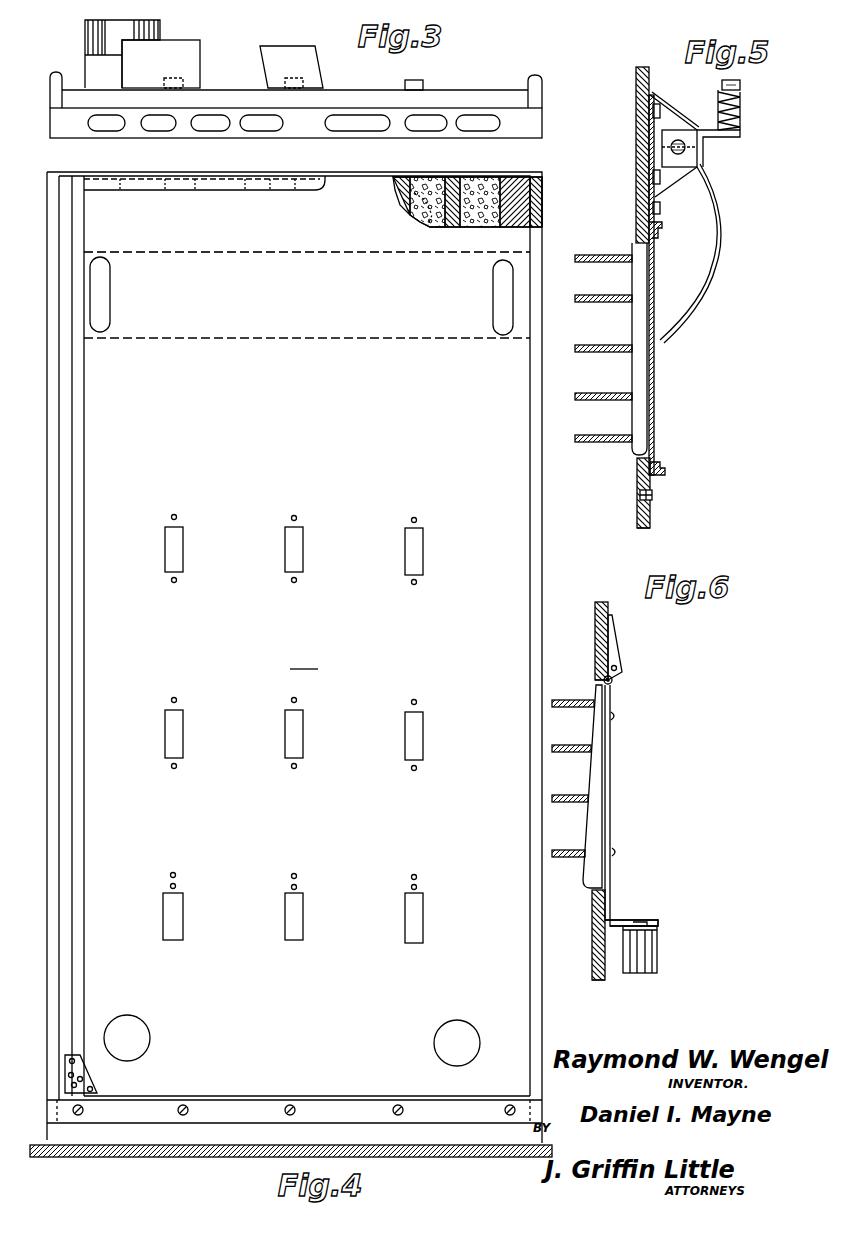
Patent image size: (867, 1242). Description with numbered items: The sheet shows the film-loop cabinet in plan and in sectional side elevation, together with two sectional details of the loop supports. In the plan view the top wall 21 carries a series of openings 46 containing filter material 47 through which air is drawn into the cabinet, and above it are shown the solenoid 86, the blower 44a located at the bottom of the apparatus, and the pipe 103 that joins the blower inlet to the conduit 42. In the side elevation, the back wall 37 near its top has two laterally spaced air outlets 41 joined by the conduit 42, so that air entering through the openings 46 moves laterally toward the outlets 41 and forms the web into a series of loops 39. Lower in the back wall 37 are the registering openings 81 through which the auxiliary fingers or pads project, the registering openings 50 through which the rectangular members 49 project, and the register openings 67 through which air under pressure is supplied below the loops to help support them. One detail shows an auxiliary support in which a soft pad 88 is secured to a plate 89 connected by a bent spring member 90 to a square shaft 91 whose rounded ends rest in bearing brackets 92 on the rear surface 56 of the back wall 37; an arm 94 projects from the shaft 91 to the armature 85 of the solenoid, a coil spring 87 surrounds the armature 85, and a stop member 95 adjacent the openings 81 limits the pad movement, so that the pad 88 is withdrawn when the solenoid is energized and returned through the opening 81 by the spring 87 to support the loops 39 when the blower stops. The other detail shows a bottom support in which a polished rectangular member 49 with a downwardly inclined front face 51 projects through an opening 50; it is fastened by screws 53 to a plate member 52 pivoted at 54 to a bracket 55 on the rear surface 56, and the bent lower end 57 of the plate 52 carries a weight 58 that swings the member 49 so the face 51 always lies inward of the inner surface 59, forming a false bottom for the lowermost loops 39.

In FIG. 3, the top wall 21 is at (308, 126).
In FIG. 3, the openings 46 is at (163, 124).
In FIG. 4, the openings 46 is at (432, 178).
In FIG. 3, the blower 44a is at (85, 40).
In FIG. 3, the solenoid 86 is at (190, 58).
In FIG. 3, the pipe 103 is at (322, 68).
In FIG. 4, the filter material 47 is at (480, 195).
In FIG. 4, the air outlets 41 is at (110, 290).
In FIG. 4, the conduit 42 is at (315, 340).
In FIG. 4, the registering openings 81 is at (405, 545).
In FIG. 5, the registering openings 81 is at (638, 462).
In FIG. 4, the rectangular members 49 is at (170, 912).
In FIG. 6, the rectangular members 49 is at (598, 762).
In FIG. 4, the registering openings 50 is at (423, 917).
In FIG. 6, the registering openings 50 is at (595, 890).
In FIG. 4, the register openings 67 is at (140, 1037).
In FIG. 5, the bearing brackets 92 is at (650, 92).
In FIG. 5, the plate 89 is at (655, 395).
In FIG. 5, the soft pad 88 is at (640, 370).
In FIG. 5, the square shaft 91 is at (680, 138).
In FIG. 5, the arm 94 is at (715, 140).
In FIG. 5, the coil spring 87 is at (742, 115).
In FIG. 5, the armature 85 is at (742, 87).
In FIG. 5, the bent spring member 90 is at (712, 252).
In FIG. 5, the stop member 95 is at (660, 228).
In FIG. 5, the loops 39 is at (595, 295).
In FIG. 6, the loops 39 is at (575, 700).
In FIG. 5, the rear surface 56 is at (652, 510).
In FIG. 6, the rear surface 56 is at (608, 610).
In FIG. 5, the back wall 37 is at (650, 528).
In FIG. 6, the back wall 37 is at (600, 978).
In FIG. 6, the inner surface 59 is at (600, 660).
In FIG. 6, the bracket 55 is at (612, 640).
In FIG. 6, the pivot 54 is at (612, 680).
In FIG. 6, the screws 53 is at (613, 718).
In FIG. 6, the plate member 52 is at (610, 820).
In FIG. 6, the bent lower end 57 is at (618, 920).
In FIG. 6, the weight 58 is at (655, 945).
In FIG. 6, the front face 51 is at (578, 835).